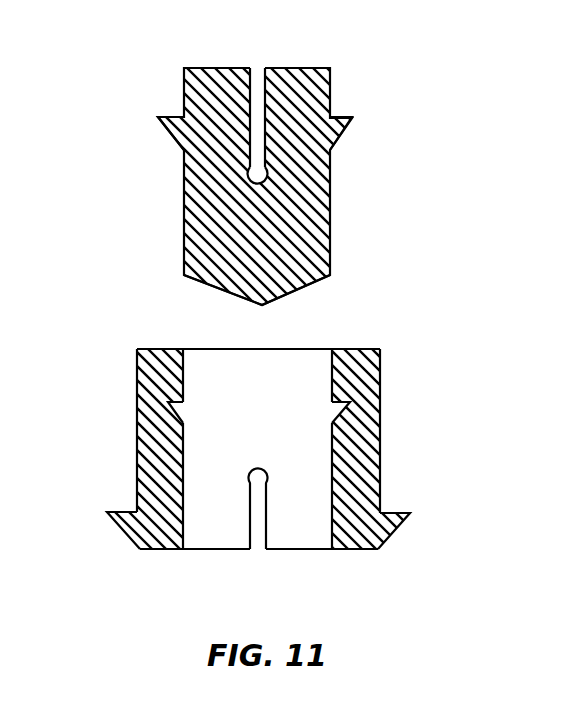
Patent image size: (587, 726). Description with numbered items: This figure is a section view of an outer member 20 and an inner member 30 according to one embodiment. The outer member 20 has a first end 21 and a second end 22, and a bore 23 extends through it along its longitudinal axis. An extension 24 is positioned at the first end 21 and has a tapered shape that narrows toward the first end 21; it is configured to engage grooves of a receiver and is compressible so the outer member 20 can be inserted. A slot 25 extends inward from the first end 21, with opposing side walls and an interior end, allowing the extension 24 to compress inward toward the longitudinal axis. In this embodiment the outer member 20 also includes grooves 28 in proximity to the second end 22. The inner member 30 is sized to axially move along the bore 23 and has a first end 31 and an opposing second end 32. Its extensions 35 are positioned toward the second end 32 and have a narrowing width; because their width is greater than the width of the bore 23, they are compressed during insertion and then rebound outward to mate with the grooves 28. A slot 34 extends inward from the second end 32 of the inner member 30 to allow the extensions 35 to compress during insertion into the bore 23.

The outer member 20 is at (375, 421).
The first end 21 is at (207, 550).
The second end 22 is at (163, 358).
The bore 23 is at (220, 422).
The extension 24 is at (392, 520).
The slot 25 is at (268, 515).
The grooves 28 is at (177, 405).
The inner member 30 is at (310, 205).
The first end 31 is at (265, 305).
The second end 32 is at (296, 68).
The slot 34 is at (252, 163).
The extension 35 is at (351, 121).